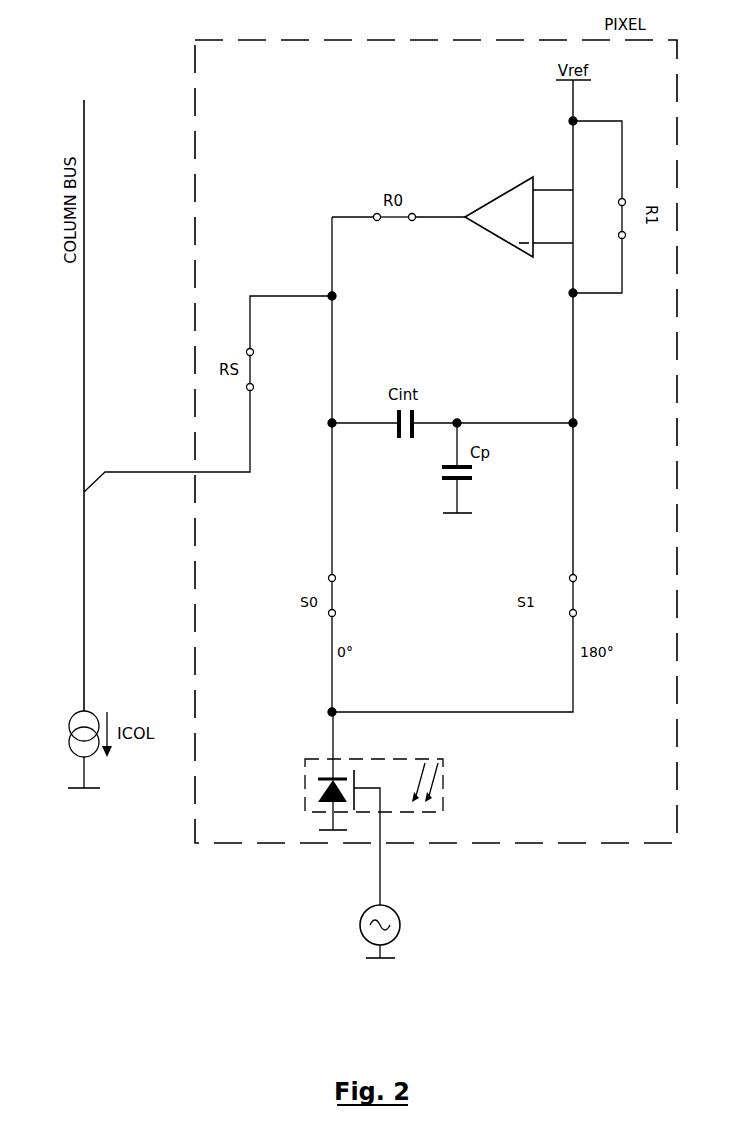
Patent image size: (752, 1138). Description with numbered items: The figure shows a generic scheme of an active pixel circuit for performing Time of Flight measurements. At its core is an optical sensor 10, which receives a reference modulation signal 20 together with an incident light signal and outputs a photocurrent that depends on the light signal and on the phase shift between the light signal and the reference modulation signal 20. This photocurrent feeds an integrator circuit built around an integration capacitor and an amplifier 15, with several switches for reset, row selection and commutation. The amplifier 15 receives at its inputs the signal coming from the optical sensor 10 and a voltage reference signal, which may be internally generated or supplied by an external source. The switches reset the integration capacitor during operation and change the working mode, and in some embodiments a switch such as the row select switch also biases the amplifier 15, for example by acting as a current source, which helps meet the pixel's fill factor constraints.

The optical sensor 10 is at (305, 770).
The amplifier 15 is at (510, 190).
The reference modulation signal 20 is at (360, 922).